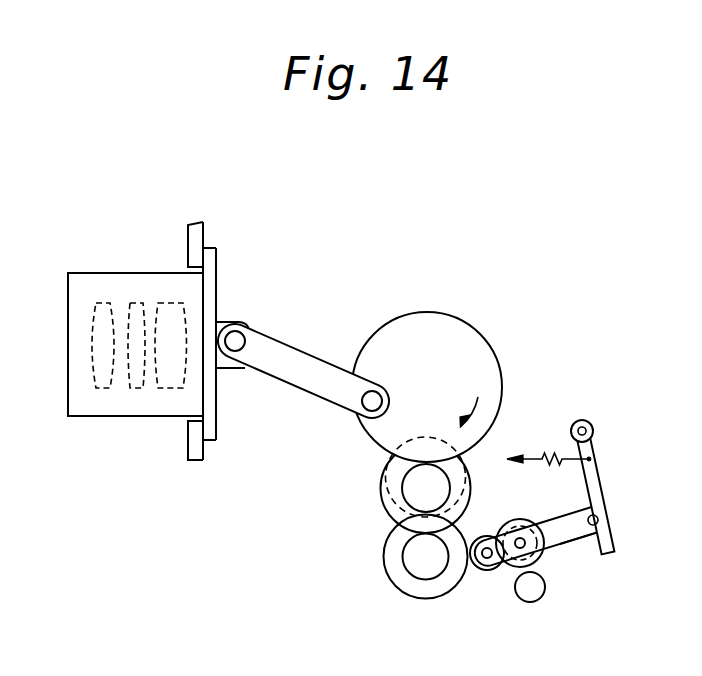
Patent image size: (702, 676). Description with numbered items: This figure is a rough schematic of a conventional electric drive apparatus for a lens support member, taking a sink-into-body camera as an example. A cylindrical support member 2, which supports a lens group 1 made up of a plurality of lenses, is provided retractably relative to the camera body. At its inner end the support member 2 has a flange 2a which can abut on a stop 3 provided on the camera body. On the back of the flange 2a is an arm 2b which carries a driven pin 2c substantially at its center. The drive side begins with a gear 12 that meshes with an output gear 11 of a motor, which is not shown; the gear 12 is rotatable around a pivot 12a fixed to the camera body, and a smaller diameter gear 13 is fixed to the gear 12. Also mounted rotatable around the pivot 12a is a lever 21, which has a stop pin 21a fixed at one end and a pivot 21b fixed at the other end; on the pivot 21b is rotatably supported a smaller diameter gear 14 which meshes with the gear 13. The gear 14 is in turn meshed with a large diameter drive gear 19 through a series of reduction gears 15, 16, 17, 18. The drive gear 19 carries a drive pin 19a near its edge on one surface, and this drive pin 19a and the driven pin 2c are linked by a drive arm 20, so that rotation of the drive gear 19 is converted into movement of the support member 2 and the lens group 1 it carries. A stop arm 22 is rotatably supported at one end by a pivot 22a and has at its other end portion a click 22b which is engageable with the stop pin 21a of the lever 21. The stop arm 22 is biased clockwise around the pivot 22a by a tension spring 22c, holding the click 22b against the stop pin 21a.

The lens group 1 is at (94, 347).
The support member 2 is at (91, 418).
The flange 2a is at (211, 445).
The arm 2b is at (249, 322).
The driven pin 2c is at (234, 333).
The stop 3 is at (193, 440).
The output gear 11 is at (528, 594).
The gear 12 is at (511, 573).
The pivot 12a is at (543, 522).
The smaller diameter gear 13 is at (517, 530).
The smaller diameter gear 14 is at (482, 575).
The reduction gear 15 is at (403, 582).
The reduction gear 16 is at (405, 556).
The reduction gear 17 is at (386, 500).
The reduction gear 18 is at (408, 483).
The large diameter drive gear 19 is at (478, 350).
The drive pin 19a is at (365, 403).
The drive arm 20 is at (318, 366).
The lever 21 is at (567, 547).
The stop pin 21a is at (588, 538).
The pivot 21b is at (484, 537).
The stop arm 22 is at (595, 468).
The pivot 22a is at (594, 430).
The click 22b is at (608, 516).
The tension spring 22c is at (545, 446).